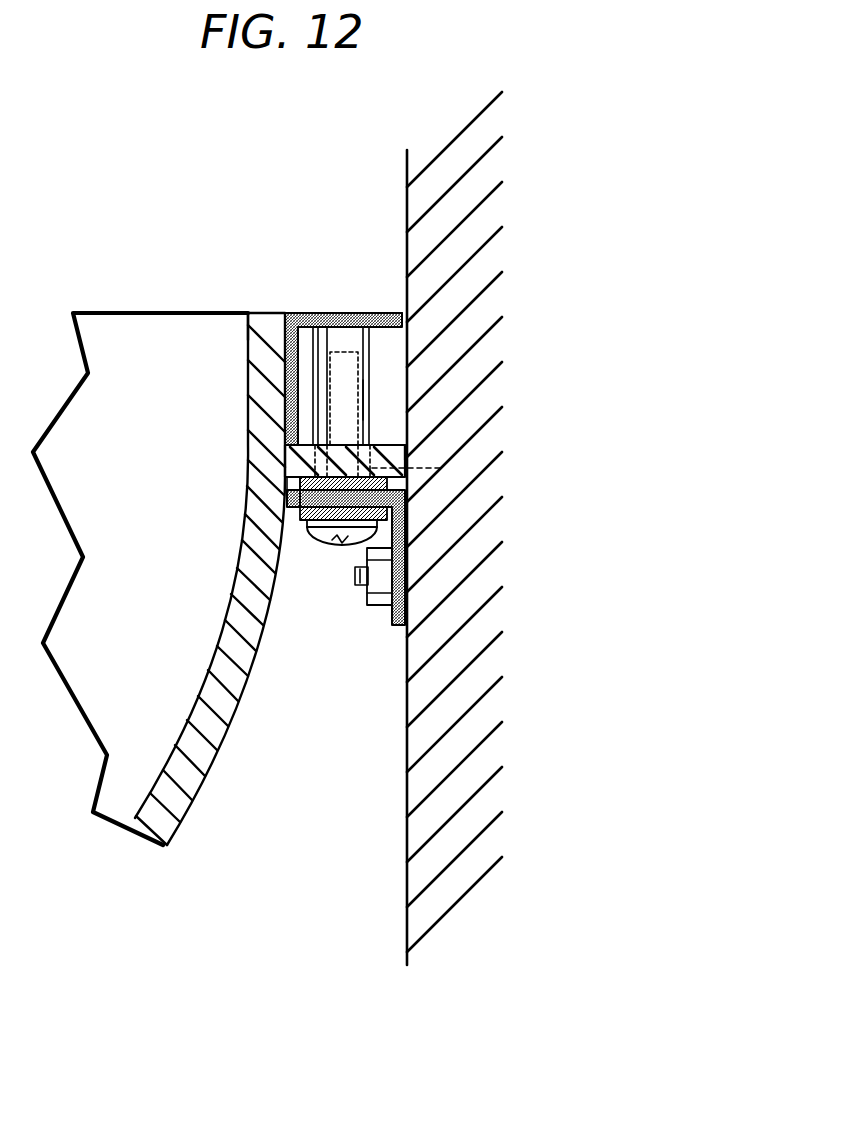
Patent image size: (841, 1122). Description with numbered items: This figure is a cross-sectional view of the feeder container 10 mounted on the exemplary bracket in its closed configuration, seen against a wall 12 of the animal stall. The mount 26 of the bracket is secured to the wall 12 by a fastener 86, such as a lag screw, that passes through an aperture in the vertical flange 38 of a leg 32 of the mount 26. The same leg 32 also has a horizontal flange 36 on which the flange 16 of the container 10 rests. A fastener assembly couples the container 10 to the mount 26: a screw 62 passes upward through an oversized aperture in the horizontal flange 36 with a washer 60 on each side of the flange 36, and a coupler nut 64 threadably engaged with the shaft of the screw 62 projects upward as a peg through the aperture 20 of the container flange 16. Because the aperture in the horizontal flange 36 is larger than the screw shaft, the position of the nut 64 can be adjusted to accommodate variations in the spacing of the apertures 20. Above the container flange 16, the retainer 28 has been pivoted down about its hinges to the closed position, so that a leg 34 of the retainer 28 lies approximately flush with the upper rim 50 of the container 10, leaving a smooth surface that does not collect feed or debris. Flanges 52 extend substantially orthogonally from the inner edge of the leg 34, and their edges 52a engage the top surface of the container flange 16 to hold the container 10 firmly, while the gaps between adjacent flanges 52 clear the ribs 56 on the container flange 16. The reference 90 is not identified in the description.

The container 10 is at (163, 735).
The wall 12 is at (521, 585).
The flange 16 is at (410, 450).
The aperture 20 is at (440, 468).
The mount 26 is at (398, 642).
The retainer 28 is at (371, 296).
The leg 32 is at (300, 483).
The leg 34 is at (314, 312).
The horizontal flange 36 is at (298, 500).
The vertical flange 38 is at (395, 612).
The upper rim 50 is at (264, 312).
The flange 52 is at (300, 397).
The edge 52a is at (290, 450).
The rib 56 is at (283, 368).
The washer 60 is at (312, 519).
The screw 62 is at (339, 542).
The coupler nut 64 is at (372, 400).
The fastener 86 is at (372, 582).
The flange leg 90 is at (291, 312).